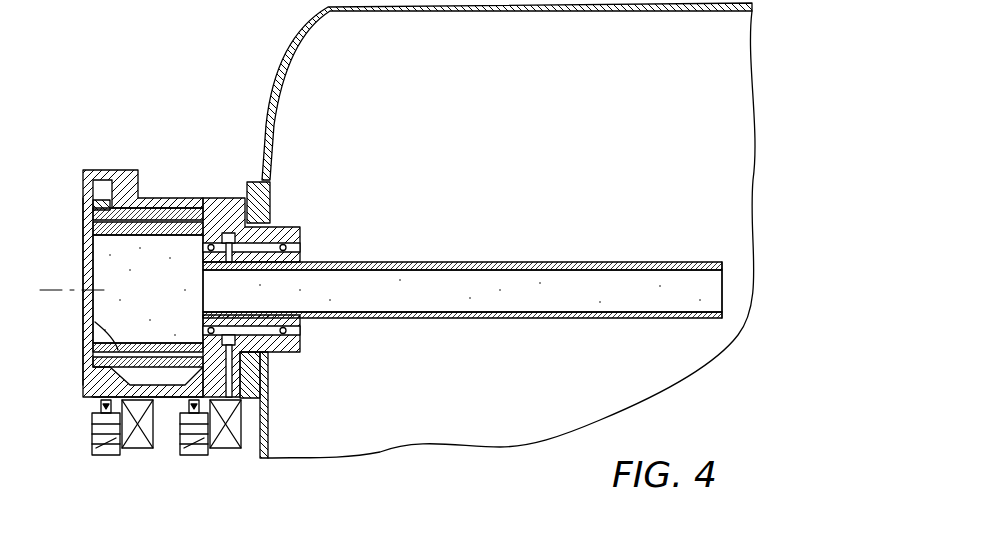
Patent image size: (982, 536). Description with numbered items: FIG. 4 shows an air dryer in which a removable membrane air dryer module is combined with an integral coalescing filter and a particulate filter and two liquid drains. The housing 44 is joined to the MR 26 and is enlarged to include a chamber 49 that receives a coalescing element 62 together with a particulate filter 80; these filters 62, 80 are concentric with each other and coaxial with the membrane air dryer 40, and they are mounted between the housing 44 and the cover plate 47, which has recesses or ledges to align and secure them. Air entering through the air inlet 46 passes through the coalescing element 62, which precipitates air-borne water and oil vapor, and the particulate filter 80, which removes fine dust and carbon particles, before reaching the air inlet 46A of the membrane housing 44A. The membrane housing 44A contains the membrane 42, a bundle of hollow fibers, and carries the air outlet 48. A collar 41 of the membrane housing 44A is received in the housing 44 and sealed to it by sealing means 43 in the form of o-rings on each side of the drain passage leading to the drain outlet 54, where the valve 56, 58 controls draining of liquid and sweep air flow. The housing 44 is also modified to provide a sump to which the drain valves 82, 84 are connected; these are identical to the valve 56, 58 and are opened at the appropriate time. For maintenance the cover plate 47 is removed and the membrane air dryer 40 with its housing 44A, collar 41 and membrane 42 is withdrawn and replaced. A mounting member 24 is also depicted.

The mounting member 24 is at (262, 221).
The MR 26 is at (268, 100).
The membrane air dryer 40 is at (487, 245).
The collar 41 is at (300, 252).
The membrane 42 is at (614, 300).
The sealing means 43 is at (290, 332).
The housing 44 is at (218, 198).
The membrane housing 44A is at (456, 262).
The air inlet 46 is at (83, 182).
The air inlet 46A is at (200, 292).
The cover plate 47 is at (86, 252).
The air outlet 48 is at (722, 292).
The chamber 49 is at (108, 208).
The drain outlet 54 is at (245, 342).
The valve 56 is at (228, 448).
The valve 58 is at (198, 455).
The coalescing element 62 is at (97, 397).
The particulate filter 80 is at (95, 322).
The drain valve 82 is at (137, 448).
The drain valve 84 is at (100, 455).